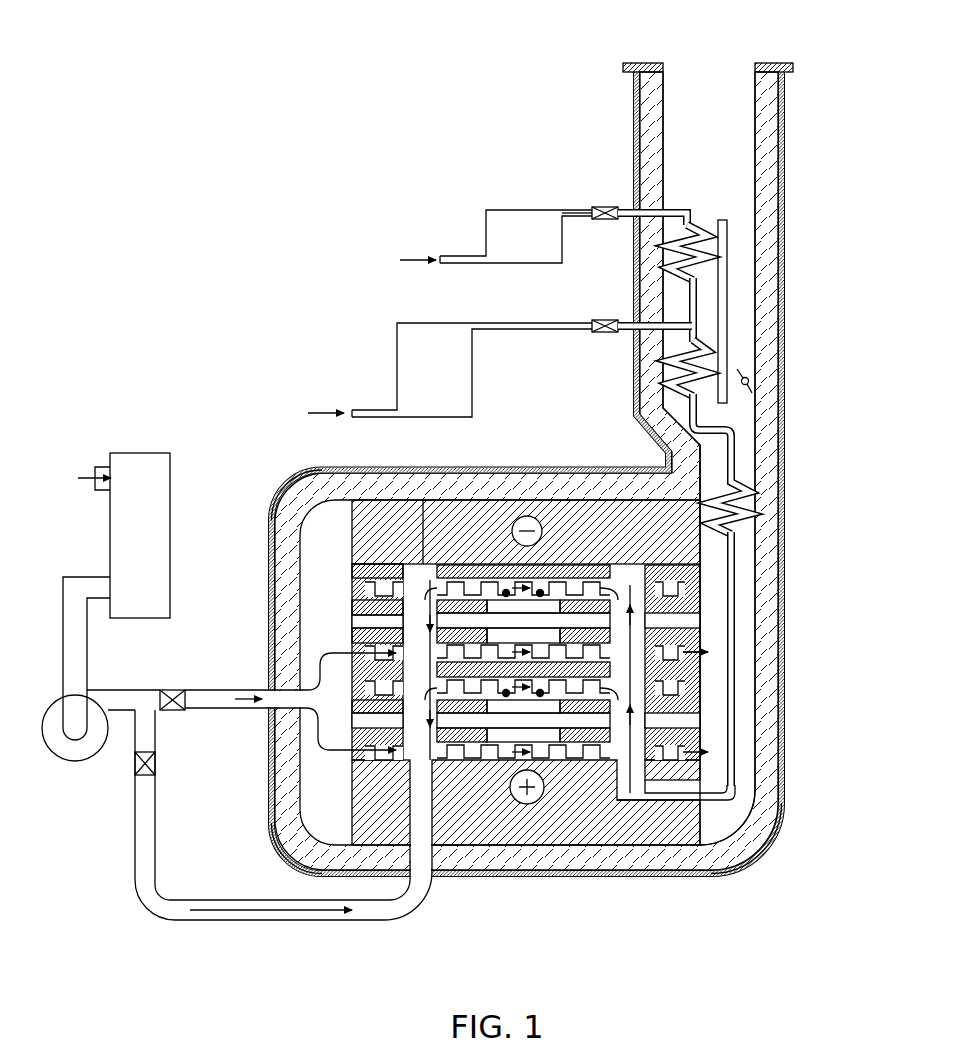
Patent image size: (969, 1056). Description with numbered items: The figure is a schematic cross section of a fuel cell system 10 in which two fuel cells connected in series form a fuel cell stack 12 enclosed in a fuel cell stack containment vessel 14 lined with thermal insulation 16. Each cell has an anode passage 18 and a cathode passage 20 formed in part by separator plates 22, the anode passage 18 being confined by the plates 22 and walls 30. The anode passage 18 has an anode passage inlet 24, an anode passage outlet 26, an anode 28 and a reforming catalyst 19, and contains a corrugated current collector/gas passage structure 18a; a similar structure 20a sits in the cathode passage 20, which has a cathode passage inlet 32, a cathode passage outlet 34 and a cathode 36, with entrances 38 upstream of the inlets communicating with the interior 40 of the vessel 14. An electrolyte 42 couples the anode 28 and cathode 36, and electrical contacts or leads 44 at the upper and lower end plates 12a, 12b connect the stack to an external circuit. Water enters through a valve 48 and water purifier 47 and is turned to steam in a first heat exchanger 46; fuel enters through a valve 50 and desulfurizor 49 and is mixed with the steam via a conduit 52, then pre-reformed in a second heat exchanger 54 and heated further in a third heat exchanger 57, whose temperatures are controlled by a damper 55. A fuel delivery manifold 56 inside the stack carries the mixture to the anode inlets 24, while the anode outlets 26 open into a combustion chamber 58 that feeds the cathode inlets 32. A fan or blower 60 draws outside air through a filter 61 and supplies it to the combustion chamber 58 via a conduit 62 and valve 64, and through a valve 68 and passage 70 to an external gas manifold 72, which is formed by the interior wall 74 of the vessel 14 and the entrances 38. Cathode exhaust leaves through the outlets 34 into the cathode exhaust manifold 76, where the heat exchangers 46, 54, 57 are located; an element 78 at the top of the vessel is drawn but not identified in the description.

The fuel cell system 10 is at (170, 177).
The fuel cell stack 12 is at (275, 548).
The upper end plate 12a is at (283, 505).
The lower end plate 12b is at (312, 830).
The fuel cell stack containment vessel 14 is at (790, 758).
The thermal insulation 16 is at (790, 820).
The anode passage 18 is at (447, 600).
The current collector/gas passage structure 18a is at (514, 590).
The reforming catalyst 19 is at (503, 590).
The cathode passage 20 is at (557, 600).
The current collector/gas passage structure 20a is at (584, 590).
The separator plates 22 is at (360, 572).
The anode passage inlet 24 is at (625, 585).
The anode passage outlet 26 is at (398, 560).
The anode 28 is at (530, 600).
The walls 30 is at (352, 601).
The cathode passage inlet 32 is at (352, 540).
The cathode passage outlet 34 is at (705, 651).
The cathode 36 is at (482, 565).
The entrances 38 is at (300, 668).
The interior of the vessel 40 is at (742, 548).
The electrolyte 42 is at (595, 600).
The electrical contacts or leads 44 is at (522, 805).
The first heat exchanger 46 is at (690, 248).
The water purifier 47 is at (512, 213).
The valve 48 is at (600, 207).
The desulfurizor 49 is at (397, 355).
The valve 50 is at (604, 320).
The conduit 52 is at (697, 318).
The second heat exchanger 54 is at (713, 362).
The damper 55 is at (750, 382).
The fuel delivery manifold 56 is at (620, 585).
The third heat exchanger 57 is at (745, 503).
The combustion chamber 58 is at (444, 588).
The fan or blower 60 is at (80, 762).
The filter 61 is at (135, 452).
The conduit 62 is at (280, 920).
The valve 64 is at (133, 772).
The valve 68 is at (173, 690).
The passage 70 is at (218, 690).
The external gas manifold 72 is at (300, 630).
The interior wall of vessel 74 is at (738, 822).
The cathode exhaust manifold 76 is at (748, 561).
The chimney 78 is at (712, 60).